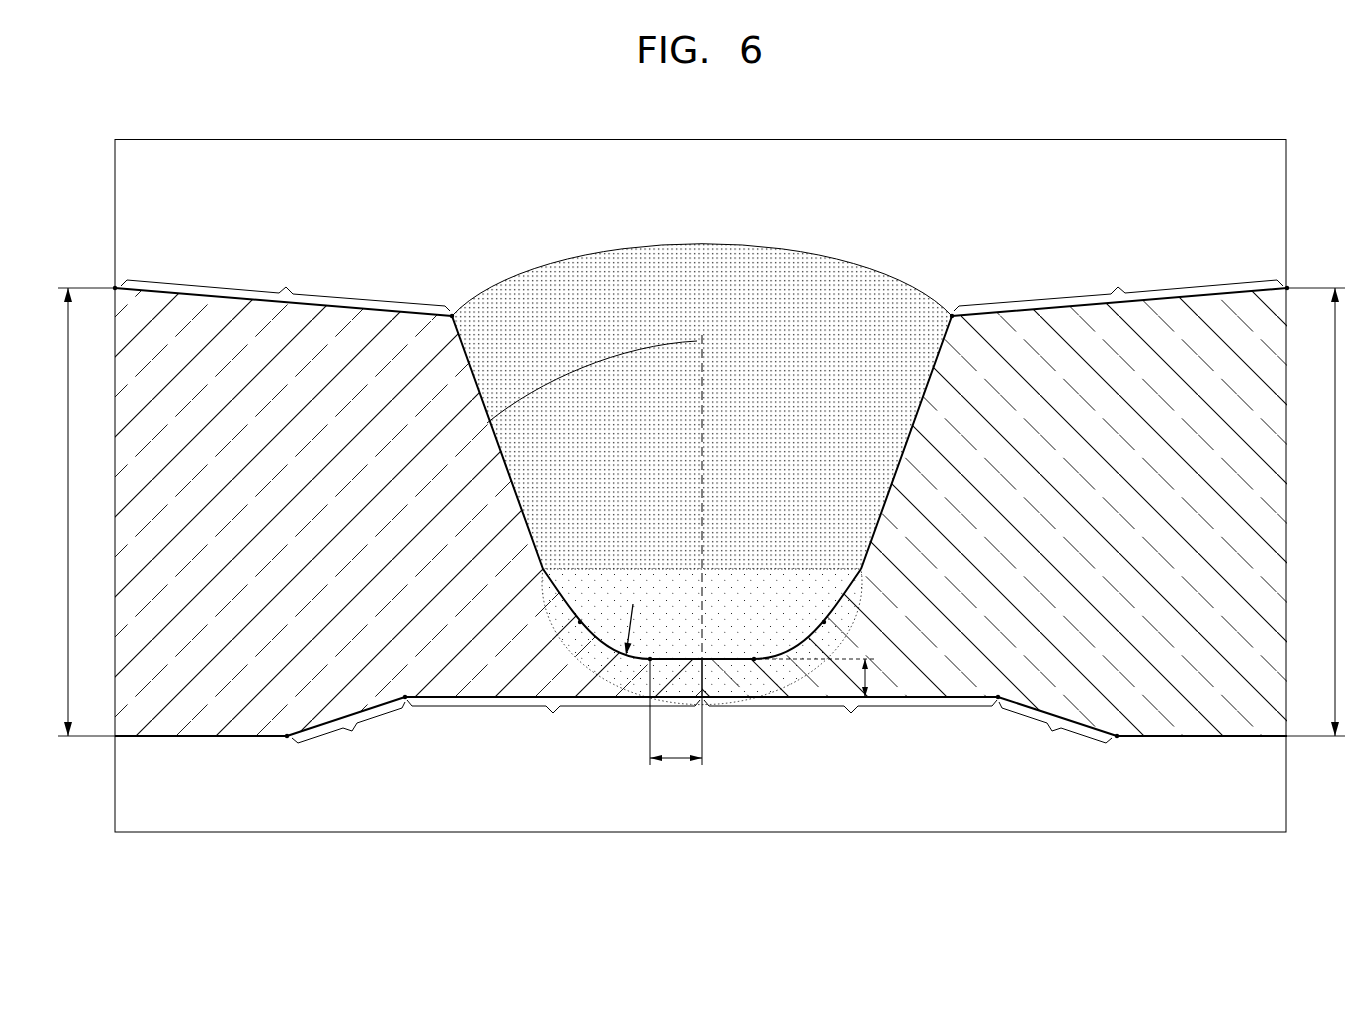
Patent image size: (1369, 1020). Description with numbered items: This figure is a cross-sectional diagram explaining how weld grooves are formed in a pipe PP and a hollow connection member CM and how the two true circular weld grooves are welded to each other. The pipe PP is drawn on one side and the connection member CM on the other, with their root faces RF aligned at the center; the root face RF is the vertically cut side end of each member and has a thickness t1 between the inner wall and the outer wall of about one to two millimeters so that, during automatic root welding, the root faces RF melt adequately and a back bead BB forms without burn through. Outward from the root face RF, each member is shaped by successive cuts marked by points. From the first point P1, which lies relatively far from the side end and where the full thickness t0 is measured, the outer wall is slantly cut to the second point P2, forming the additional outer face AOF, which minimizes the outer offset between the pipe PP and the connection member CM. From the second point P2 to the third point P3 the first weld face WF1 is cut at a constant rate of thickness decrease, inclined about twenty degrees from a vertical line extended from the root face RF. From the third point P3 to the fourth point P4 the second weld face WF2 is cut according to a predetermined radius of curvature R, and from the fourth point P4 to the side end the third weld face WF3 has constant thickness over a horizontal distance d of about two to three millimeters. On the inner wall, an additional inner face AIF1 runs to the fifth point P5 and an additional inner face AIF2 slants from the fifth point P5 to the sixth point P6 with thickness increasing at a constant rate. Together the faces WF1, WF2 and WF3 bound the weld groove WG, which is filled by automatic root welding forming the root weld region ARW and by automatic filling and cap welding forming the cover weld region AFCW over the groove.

The pipe PP is at (190, 740).
The hollow connection member CM is at (1212, 740).
The weld groove WG is at (698, 238).
The arc filler cover weld region AFCW is at (812, 273).
The arc root weld region ARW is at (765, 638).
The back bead BB is at (712, 680).
The root face RF is at (722, 708).
The additional outer face AOF is at (701, 285).
The additional inner face AIF1 is at (702, 729).
The additional inner face AIF2 is at (701, 721).
The first weld face WF1 is at (688, 657).
The second weld face WF2 is at (785, 650).
The third weld face WF3 is at (897, 472).
The first point P1 is at (1116, 778).
The second point P2 is at (998, 752).
The third point P3 is at (752, 657).
The fourth point P4 is at (823, 620).
The fifth point P5 is at (951, 314).
The sixth point P6 is at (1285, 286).
The thickness t0 is at (701, 512).
The thickness t1 is at (800, 678).
The horizontal distance d is at (676, 712).
The radius of curvature R is at (637, 629).